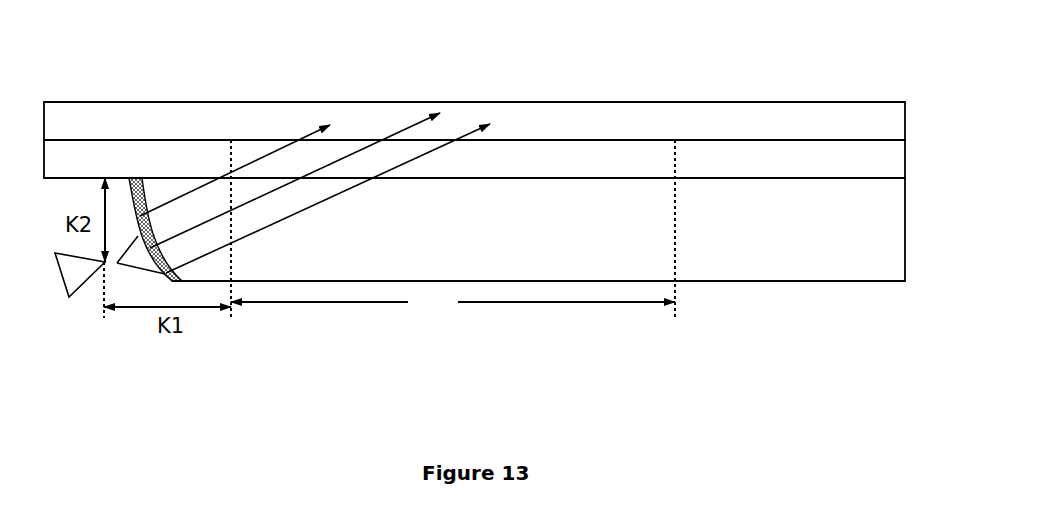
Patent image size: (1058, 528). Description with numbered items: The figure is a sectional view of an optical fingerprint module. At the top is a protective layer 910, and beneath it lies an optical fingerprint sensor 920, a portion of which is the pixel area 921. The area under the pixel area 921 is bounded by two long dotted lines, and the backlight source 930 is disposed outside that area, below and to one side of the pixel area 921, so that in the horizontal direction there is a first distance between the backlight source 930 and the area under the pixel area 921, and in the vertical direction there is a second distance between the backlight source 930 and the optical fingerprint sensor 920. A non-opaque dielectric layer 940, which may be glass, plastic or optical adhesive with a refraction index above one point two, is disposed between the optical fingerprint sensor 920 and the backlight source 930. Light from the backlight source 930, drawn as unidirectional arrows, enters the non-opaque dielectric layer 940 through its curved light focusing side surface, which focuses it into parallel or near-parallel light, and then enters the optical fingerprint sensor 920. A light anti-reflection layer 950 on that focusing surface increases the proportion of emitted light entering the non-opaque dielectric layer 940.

The protective layer 910 is at (791, 127).
The optical fingerprint sensor 920 is at (718, 165).
The pixel area 921 is at (453, 229).
The backlight source 930 is at (72, 278).
The non-opaque dielectric layer 940 is at (723, 264).
The light anti-reflection layer 950 is at (140, 187).